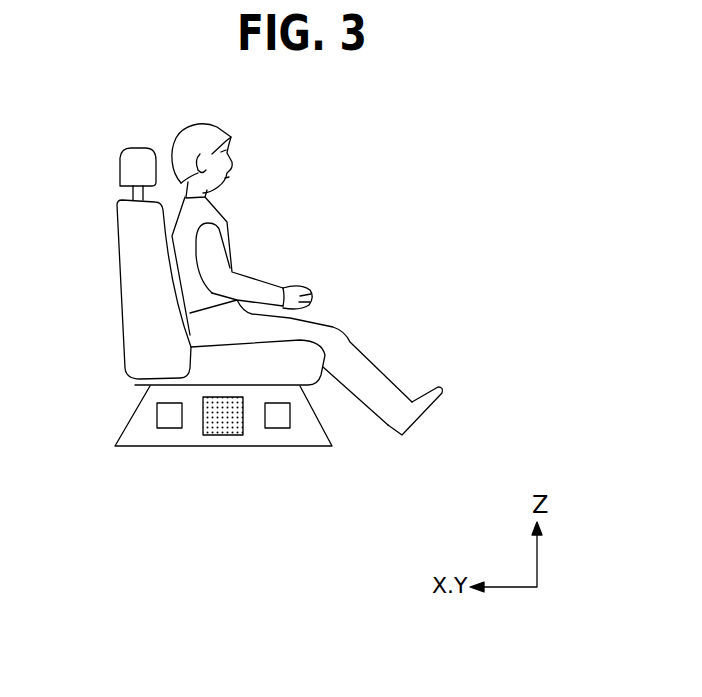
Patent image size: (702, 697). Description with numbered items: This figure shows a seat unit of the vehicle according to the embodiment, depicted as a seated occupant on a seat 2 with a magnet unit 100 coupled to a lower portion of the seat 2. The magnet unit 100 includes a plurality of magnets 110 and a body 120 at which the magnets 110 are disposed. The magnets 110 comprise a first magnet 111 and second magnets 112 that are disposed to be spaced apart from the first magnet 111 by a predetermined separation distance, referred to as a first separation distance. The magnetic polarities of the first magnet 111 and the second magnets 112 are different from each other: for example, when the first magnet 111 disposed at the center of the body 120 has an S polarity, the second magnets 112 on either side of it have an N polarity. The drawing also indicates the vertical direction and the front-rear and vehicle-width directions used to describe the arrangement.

The seat 2 is at (148, 275).
The magnet unit 100 is at (241, 493).
The magnets 110 is at (228, 473).
The first magnet 111 is at (229, 446).
The second magnets 112 is at (168, 428).
The body 120 is at (318, 437).